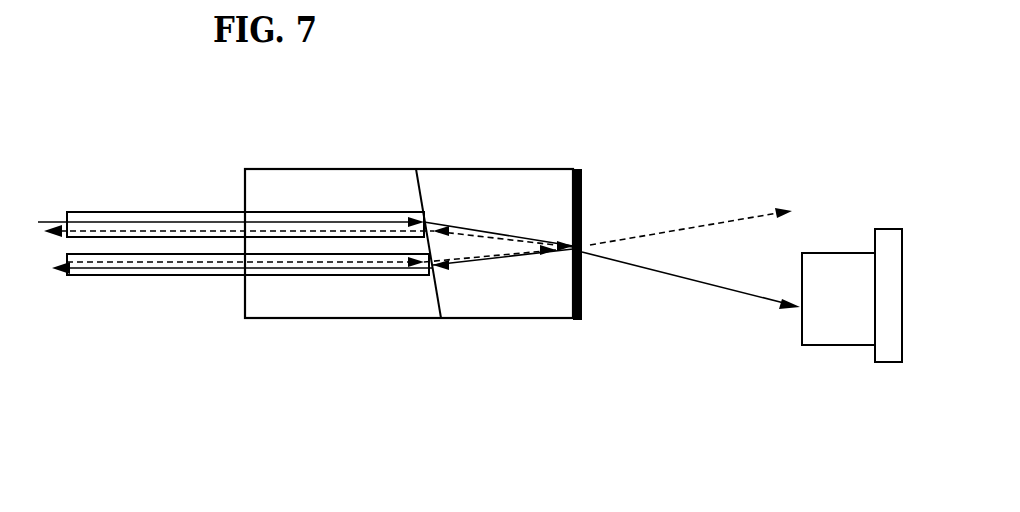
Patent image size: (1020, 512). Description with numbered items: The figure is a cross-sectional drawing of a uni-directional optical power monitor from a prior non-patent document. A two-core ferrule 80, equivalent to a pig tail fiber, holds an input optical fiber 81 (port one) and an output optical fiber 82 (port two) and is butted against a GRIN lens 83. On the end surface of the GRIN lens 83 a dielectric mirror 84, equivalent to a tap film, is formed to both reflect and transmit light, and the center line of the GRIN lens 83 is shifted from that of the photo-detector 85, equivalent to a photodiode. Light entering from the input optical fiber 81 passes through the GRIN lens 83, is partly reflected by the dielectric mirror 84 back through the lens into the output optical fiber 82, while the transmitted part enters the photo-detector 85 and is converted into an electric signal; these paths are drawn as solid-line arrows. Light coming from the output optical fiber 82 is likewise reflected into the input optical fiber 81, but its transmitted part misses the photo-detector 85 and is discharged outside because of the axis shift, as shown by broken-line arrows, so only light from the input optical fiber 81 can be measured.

The two-core ferrule 80 is at (282, 302).
The input optical fiber 81 is at (180, 212).
The output optical fiber 82 is at (118, 270).
The GRIN lens 83 is at (478, 290).
The dielectric mirror 84 is at (582, 308).
The photo-detector 85 is at (830, 327).